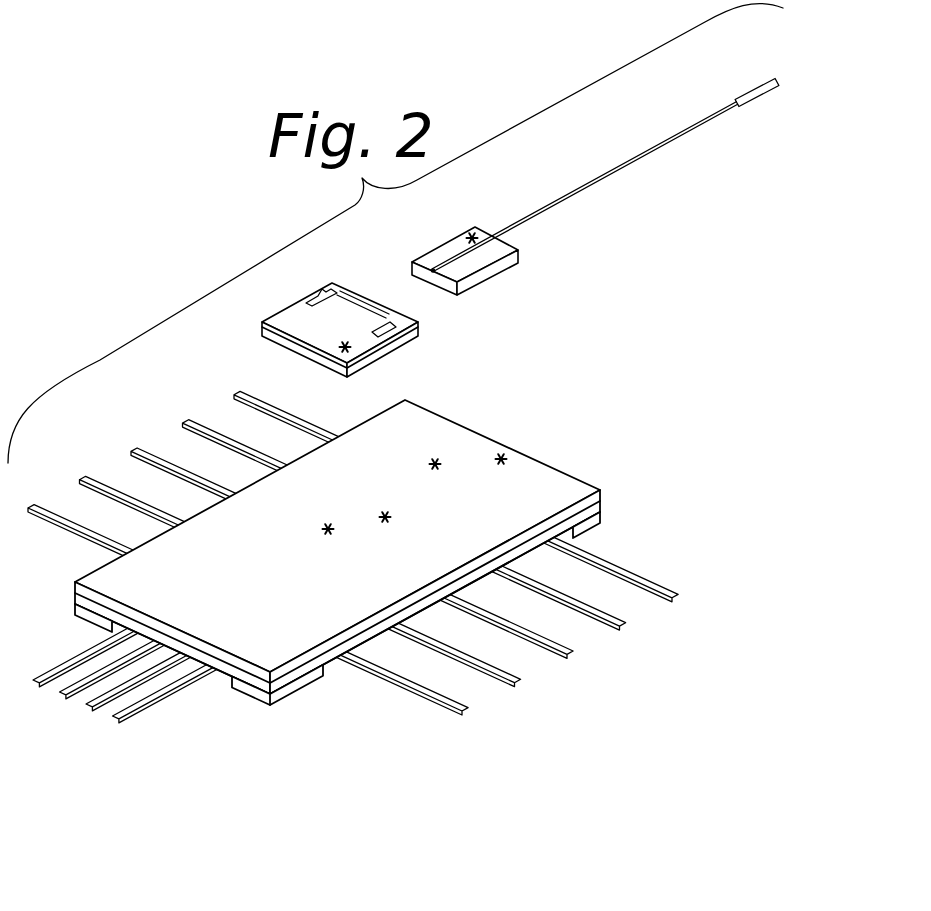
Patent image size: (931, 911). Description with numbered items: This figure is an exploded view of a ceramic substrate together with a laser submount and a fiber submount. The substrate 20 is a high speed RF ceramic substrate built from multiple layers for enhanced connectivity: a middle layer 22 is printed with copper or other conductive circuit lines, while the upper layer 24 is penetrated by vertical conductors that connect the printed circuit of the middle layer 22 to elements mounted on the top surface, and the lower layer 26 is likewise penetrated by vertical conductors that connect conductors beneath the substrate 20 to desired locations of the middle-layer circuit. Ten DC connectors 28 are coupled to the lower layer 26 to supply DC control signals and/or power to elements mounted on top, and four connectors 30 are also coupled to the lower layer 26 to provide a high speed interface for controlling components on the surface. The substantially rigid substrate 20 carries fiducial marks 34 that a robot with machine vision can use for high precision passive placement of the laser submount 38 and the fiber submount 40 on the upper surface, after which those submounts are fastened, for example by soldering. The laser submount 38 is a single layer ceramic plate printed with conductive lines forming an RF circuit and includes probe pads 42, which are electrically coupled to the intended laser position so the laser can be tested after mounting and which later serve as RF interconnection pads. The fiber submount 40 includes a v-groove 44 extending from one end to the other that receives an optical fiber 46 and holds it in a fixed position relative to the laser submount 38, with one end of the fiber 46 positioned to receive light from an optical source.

The substrate 20 is at (389, 543).
The middle layer 22 is at (593, 507).
The upper layer 24 is at (595, 497).
The lower layer 26 is at (593, 520).
The DC connectors 28 is at (246, 364).
The connectors 30 is at (136, 729).
The fiducial marks 34 is at (502, 456).
The laser submount 38 is at (325, 310).
The fiber submount 40 is at (582, 187).
The probe pads 42 is at (313, 297).
The v-groove 44 is at (490, 233).
The optical fiber 46 is at (615, 167).